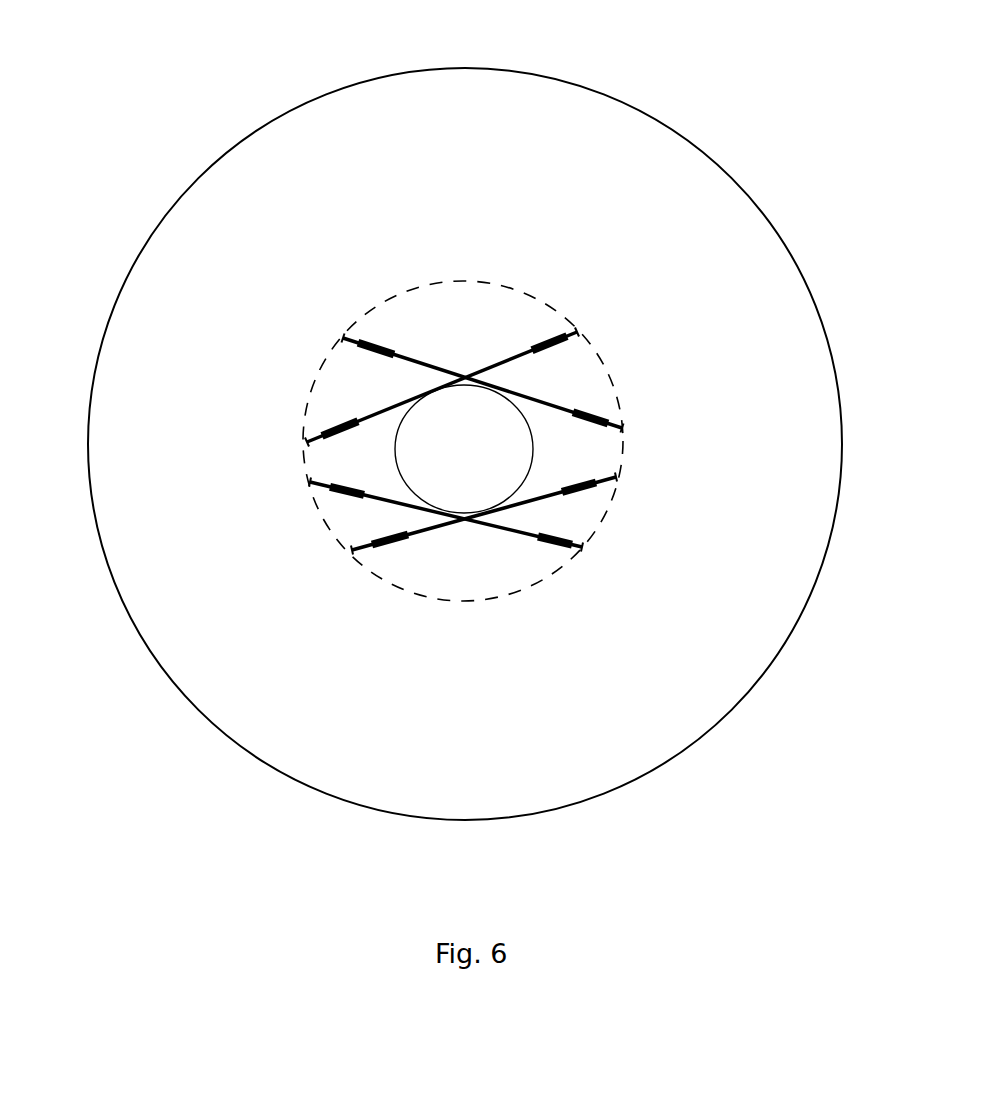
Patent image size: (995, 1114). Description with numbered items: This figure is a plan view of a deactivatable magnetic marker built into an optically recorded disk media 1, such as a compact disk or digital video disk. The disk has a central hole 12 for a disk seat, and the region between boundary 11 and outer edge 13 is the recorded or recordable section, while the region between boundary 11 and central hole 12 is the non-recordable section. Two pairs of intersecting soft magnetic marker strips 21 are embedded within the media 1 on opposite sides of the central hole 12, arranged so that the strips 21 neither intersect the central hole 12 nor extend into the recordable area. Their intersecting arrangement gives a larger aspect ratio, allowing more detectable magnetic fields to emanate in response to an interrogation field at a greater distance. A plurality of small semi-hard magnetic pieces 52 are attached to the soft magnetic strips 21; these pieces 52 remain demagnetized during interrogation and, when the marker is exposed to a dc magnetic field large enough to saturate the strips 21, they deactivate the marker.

The media 1 is at (812, 608).
The boundary between recorded and non-recorded sections 11 is at (567, 316).
The central hole 12 is at (536, 458).
The outer boundary of recorded section 13 is at (813, 288).
The soft magnetic marker strips 21 is at (515, 355).
The semi-hard magnetic pieces 52 is at (553, 347).